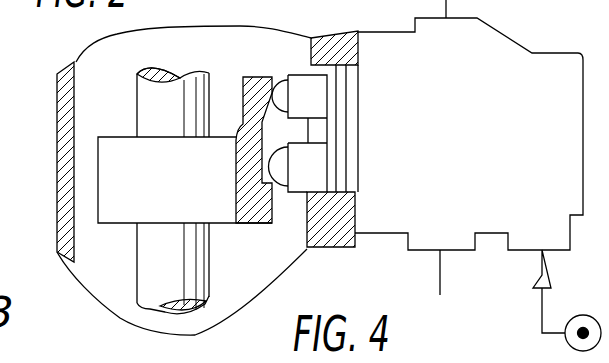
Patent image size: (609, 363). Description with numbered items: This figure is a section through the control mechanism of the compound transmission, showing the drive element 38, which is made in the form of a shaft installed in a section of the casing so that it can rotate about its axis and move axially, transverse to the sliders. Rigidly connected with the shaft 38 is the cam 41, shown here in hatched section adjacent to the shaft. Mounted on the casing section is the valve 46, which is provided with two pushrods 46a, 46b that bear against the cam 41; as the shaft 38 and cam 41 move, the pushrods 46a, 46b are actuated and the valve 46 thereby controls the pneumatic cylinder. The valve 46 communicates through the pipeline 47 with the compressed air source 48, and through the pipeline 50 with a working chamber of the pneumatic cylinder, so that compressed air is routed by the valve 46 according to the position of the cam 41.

The drive element 38 is at (157, 100).
The cam 41 is at (263, 88).
The pushrod 46a is at (303, 85).
The pushrod 46b is at (300, 183).
The valve 46 is at (515, 63).
The pipeline 50 is at (440, 276).
The pipeline 47 is at (540, 298).
The compressed air source 48 is at (595, 318).